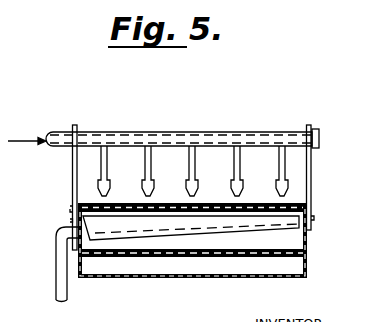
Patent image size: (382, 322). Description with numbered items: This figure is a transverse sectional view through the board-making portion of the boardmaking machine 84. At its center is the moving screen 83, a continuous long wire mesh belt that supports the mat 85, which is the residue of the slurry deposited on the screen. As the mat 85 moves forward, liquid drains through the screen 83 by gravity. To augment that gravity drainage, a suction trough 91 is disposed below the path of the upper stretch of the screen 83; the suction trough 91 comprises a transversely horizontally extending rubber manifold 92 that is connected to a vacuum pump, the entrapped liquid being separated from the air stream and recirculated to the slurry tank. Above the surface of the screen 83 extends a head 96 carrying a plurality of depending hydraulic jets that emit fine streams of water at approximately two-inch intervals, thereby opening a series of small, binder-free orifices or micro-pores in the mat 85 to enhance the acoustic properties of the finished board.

The head 96 is at (218, 131).
The rubber manifold 92 is at (241, 184).
The mat 85 is at (302, 206).
The boardmaking machine 84 is at (309, 250).
The moving screen 83 is at (218, 292).
The suction trough 91 is at (55, 245).